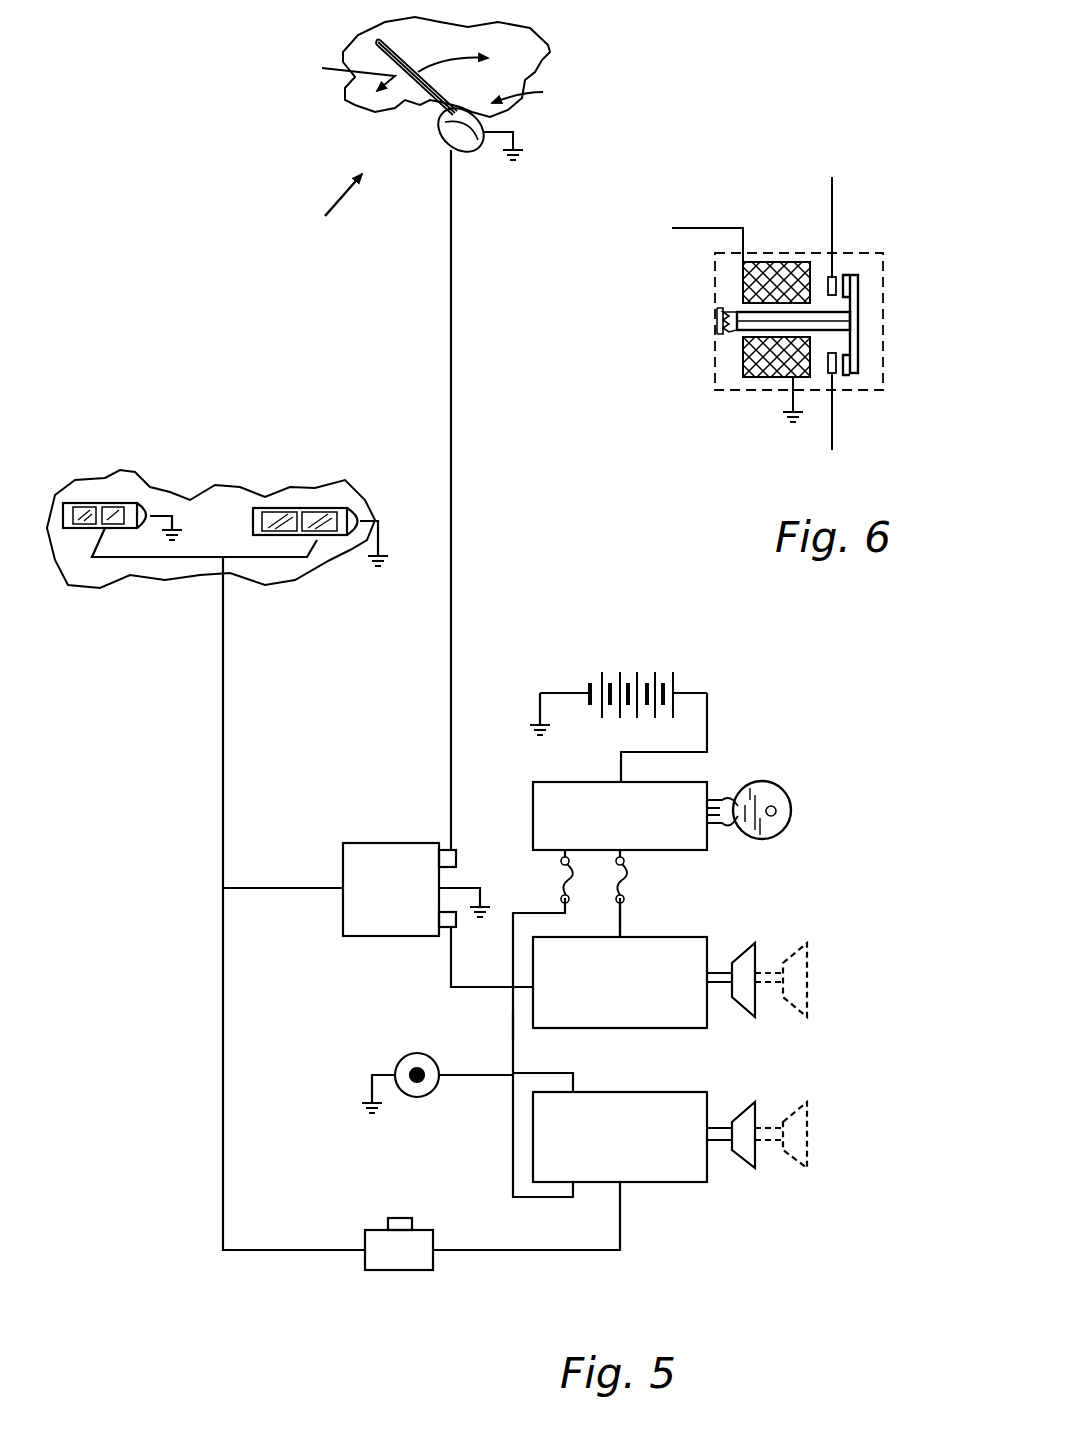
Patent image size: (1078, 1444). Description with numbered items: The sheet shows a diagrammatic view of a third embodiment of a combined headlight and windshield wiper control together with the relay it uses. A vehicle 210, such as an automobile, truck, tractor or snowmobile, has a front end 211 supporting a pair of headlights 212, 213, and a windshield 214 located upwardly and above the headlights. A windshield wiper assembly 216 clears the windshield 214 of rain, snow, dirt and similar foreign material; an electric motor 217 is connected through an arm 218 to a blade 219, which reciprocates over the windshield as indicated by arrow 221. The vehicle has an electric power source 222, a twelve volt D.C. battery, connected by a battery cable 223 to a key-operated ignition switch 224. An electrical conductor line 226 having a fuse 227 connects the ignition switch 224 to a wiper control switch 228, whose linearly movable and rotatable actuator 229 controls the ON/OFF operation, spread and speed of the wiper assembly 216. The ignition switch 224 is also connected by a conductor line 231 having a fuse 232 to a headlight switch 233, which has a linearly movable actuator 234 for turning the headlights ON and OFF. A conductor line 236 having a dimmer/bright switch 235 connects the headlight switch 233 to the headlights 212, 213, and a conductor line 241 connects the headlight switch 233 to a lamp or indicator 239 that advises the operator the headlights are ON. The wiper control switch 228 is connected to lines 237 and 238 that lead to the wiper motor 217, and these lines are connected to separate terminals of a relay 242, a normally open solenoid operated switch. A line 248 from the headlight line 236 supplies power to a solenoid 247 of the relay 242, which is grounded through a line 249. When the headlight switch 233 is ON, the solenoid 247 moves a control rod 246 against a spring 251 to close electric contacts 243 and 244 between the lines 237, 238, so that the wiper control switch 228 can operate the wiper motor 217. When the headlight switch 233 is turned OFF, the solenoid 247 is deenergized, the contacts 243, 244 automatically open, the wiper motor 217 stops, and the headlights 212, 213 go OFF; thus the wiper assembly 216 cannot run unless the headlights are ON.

In FIG. 5, the vehicle 210 is at (330, 212).
In FIG. 5, the front end 211 is at (184, 488).
In FIG. 5, the headlight 212 is at (86, 511).
In FIG. 5, the headlight 213 is at (290, 516).
In FIG. 5, the windshield 214 is at (416, 103).
In FIG. 5, the windshield wiper assembly 216 is at (542, 92).
In FIG. 5, the electric motor 217 is at (462, 148).
In FIG. 5, the arm 218 is at (408, 103).
In FIG. 5, the blade 219 is at (418, 72).
In FIG. 5, the arrow 221 is at (336, 73).
In FIG. 5, the electric power source 222 is at (652, 680).
In FIG. 5, the battery cable 223 is at (708, 723).
In FIG. 5, the ignition switch 224 is at (533, 795).
In FIG. 5, the electrical conductor line 226 is at (623, 913).
In FIG. 5, the fuse 227 is at (626, 878).
In FIG. 5, the wiper control switch 228 is at (690, 1028).
In FIG. 5, the actuator 229 is at (746, 951).
In FIG. 5, the conductor line 231 is at (513, 1022).
In FIG. 5, the fuse 232 is at (563, 878).
In FIG. 5, the headlight switch 233 is at (660, 1181).
In FIG. 5, the actuator 234 is at (745, 1170).
In FIG. 5, the dimmer/bright switch 235 is at (388, 1268).
In FIG. 5, the conductor line 236 is at (300, 1250).
In FIG. 5, the line 237 is at (452, 364).
In FIG. 6, the line 237 is at (832, 206).
In FIG. 5, the line 238 is at (451, 976).
In FIG. 6, the line 238 is at (832, 432).
In FIG. 5, the lamp or indicator 239 is at (405, 1056).
In FIG. 5, the conductor line 241 is at (460, 1076).
In FIG. 5, the relay 242 is at (380, 838).
In FIG. 6, the relay 242 is at (728, 193).
In FIG. 6, the electric contact 243 is at (847, 276).
In FIG. 6, the electric contact 244 is at (848, 377).
In FIG. 6, the control rod 246 is at (740, 312).
In FIG. 6, the solenoid 247 is at (748, 377).
In FIG. 5, the line 248 is at (310, 888).
In FIG. 6, the line 248 is at (673, 230).
In FIG. 5, the line 249 is at (481, 898).
In FIG. 6, the line 249 is at (793, 410).
In FIG. 6, the spring 251 is at (718, 331).